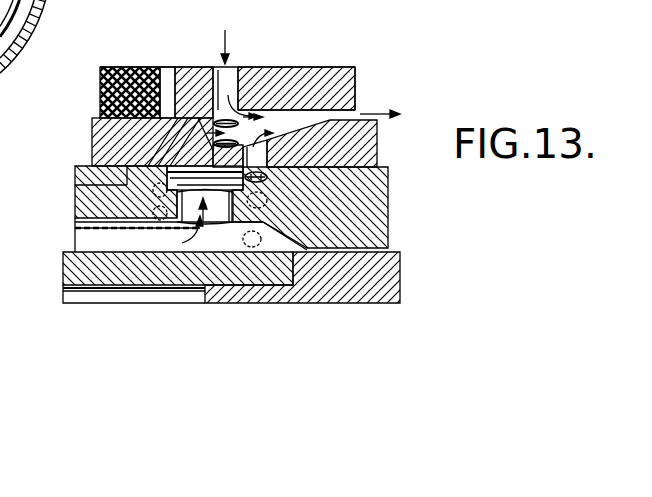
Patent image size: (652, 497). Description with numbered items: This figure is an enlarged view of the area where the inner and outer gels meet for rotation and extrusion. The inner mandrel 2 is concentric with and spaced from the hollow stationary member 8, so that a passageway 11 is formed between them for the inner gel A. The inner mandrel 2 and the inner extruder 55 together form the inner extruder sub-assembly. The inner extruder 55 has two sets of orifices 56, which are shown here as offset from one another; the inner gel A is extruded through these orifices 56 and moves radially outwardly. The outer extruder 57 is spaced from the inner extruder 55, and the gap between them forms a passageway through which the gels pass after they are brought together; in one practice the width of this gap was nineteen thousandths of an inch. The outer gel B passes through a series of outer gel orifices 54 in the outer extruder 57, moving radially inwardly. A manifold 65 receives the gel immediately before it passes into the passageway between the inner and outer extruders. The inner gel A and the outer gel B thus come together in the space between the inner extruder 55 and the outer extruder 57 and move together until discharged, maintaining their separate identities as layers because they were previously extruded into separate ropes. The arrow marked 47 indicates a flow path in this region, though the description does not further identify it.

The outer gel orifices 54 is at (213, 68).
The outer gel B is at (229, 75).
The outer extruder 57 is at (335, 79).
The manifold 65 is at (279, 122).
The inner extruder 55 is at (128, 143).
The orifices 56 is at (135, 182).
The passageway 11 is at (93, 235).
The inner mandrel 2 is at (357, 220).
The hollow stationary member 8 is at (85, 268).
The flow path arrow 47 is at (193, 218).
The inner gel A is at (212, 216).